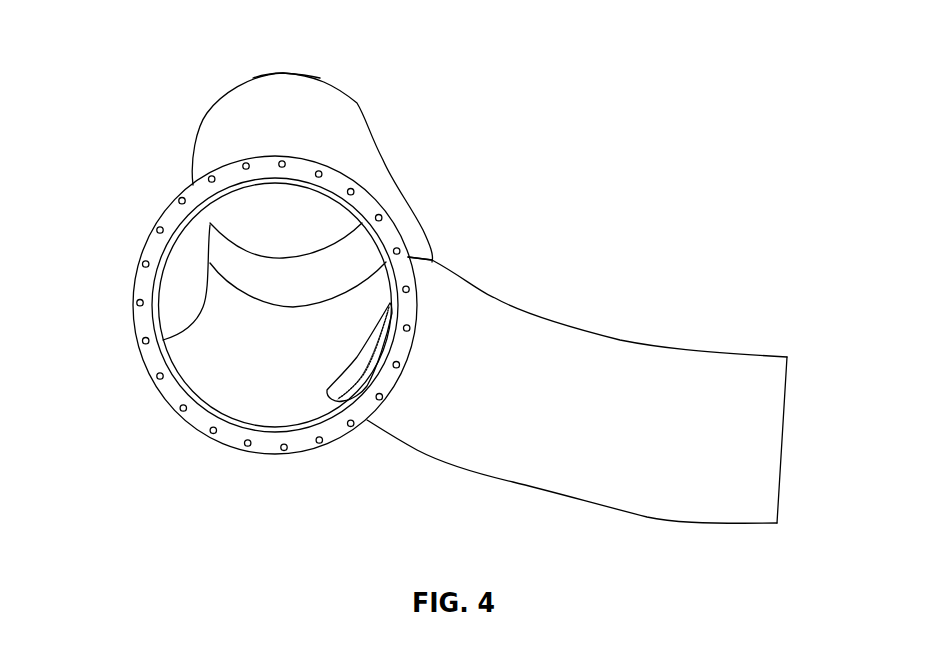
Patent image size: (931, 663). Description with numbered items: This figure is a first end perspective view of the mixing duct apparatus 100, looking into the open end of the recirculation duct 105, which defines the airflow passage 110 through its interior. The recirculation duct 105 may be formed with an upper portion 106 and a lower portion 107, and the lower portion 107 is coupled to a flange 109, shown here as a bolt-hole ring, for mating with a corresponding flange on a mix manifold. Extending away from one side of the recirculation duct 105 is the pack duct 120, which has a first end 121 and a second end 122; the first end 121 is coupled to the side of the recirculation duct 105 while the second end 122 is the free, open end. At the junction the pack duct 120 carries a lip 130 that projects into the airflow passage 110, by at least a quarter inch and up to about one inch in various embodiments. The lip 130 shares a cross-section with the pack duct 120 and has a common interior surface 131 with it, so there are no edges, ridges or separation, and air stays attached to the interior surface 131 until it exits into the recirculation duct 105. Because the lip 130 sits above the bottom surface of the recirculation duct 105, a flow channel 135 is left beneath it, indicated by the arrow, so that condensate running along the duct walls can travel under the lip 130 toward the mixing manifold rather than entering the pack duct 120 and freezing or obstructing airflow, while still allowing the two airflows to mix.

The mixing duct apparatus 100 is at (705, 178).
The recirculation duct 105 is at (357, 137).
The upper portion 106 is at (318, 77).
The lower portion 107 is at (211, 413).
The flange 109 is at (163, 397).
The airflow passage 110 is at (242, 235).
The pack duct 120 is at (622, 340).
The first end 121 is at (432, 263).
The second end 122 is at (772, 350).
The lip 130 is at (330, 383).
The interior surface 131 is at (363, 358).
The flow channel 135 is at (330, 407).